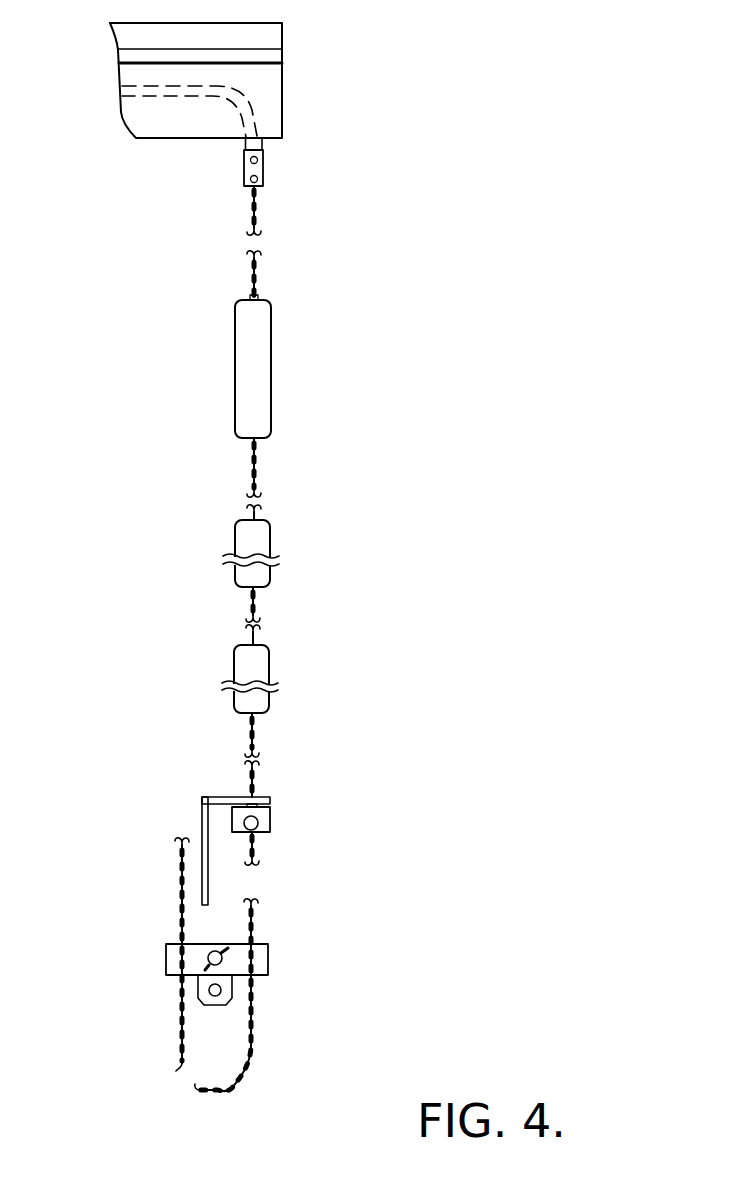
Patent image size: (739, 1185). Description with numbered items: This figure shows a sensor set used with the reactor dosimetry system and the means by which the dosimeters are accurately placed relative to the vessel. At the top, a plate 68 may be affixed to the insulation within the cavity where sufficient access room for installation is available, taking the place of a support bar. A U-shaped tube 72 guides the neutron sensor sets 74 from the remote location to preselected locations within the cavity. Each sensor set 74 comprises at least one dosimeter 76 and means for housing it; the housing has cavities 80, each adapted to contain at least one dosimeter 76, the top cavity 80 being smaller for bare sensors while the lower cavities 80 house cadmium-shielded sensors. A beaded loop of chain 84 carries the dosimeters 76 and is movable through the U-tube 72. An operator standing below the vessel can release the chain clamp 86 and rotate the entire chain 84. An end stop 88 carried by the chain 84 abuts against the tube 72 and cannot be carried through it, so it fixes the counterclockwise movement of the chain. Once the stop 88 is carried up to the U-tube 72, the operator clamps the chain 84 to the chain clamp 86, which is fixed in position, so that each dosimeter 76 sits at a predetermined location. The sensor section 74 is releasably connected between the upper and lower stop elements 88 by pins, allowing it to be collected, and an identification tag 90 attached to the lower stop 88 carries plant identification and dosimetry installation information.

The plate 68 is at (267, 33).
The U-shaped tube 72 is at (257, 100).
The neutron sensor set 74 is at (122, 543).
The dosimeter 76 is at (272, 357).
The cavity 80 is at (262, 163).
The bead chain 84 is at (257, 212).
The chain clamp 86 is at (303, 988).
The end stop 88 is at (271, 820).
The identification tag 90 is at (202, 815).